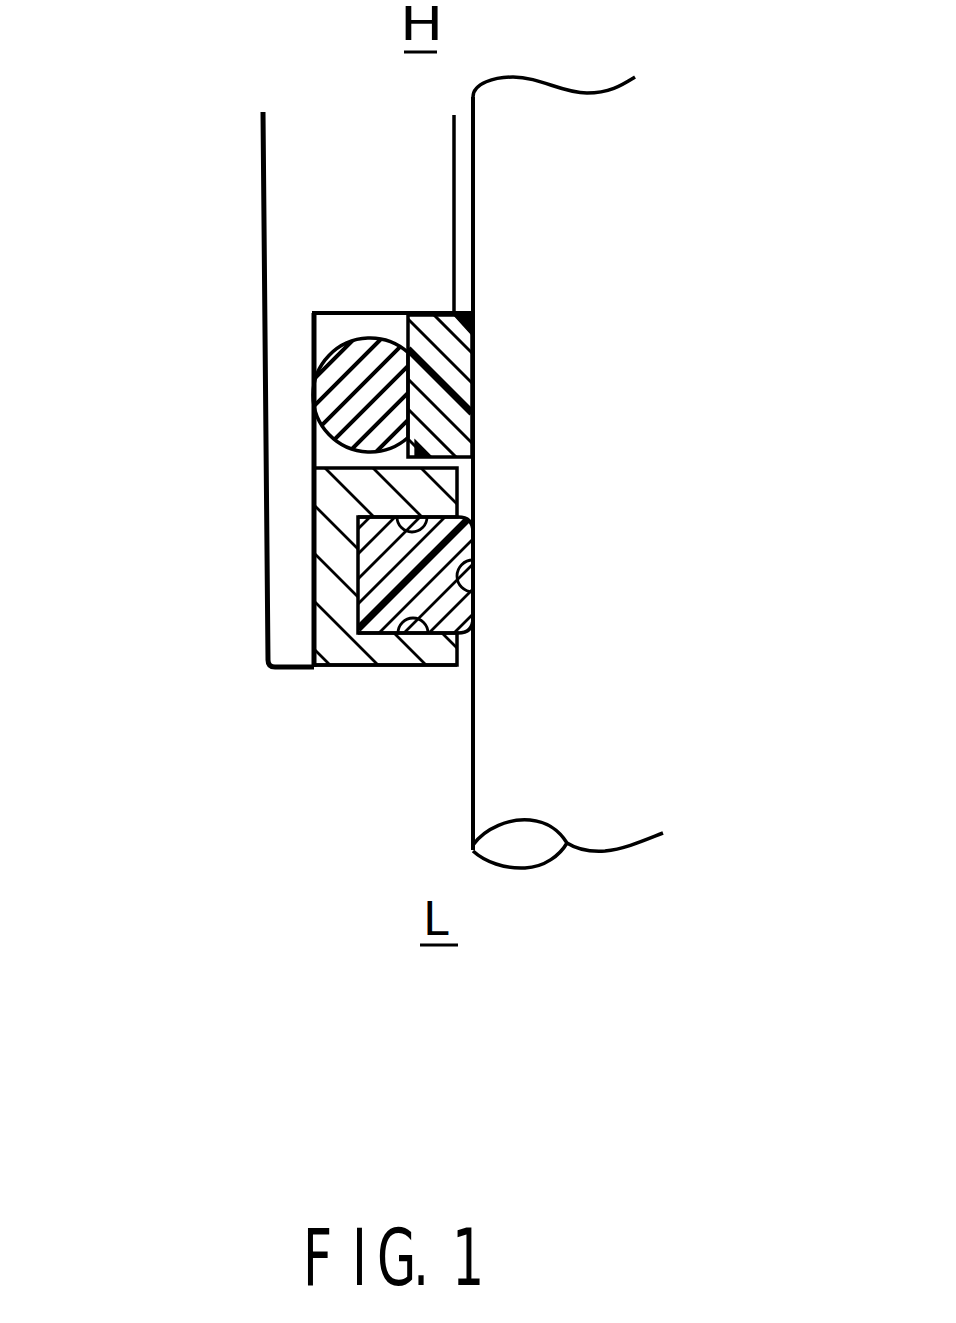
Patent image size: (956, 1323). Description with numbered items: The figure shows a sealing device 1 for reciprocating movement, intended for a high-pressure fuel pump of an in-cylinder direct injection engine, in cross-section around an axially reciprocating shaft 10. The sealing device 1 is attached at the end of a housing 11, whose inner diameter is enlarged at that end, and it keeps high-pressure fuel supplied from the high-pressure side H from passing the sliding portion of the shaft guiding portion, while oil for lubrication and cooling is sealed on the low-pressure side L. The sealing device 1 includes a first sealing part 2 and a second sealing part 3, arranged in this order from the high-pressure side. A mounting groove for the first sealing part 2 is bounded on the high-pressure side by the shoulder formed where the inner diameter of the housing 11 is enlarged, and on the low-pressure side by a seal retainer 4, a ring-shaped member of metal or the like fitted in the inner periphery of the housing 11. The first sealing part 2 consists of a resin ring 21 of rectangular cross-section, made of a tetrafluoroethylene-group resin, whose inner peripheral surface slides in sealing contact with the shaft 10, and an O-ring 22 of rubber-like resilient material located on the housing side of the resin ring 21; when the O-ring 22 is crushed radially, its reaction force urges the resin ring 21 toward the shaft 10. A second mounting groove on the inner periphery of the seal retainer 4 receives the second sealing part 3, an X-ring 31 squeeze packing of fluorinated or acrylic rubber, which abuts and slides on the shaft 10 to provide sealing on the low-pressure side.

The sealing device 1 is at (210, 500).
The first sealing part 2 is at (285, 420).
The second sealing part 3 is at (363, 587).
The seal retainer 4 is at (328, 655).
The shaft 10 is at (688, 403).
The housing 11 is at (297, 228).
The resin ring 21 is at (582, 298).
The O-ring 22 is at (312, 355).
The X-ring 31 is at (472, 565).